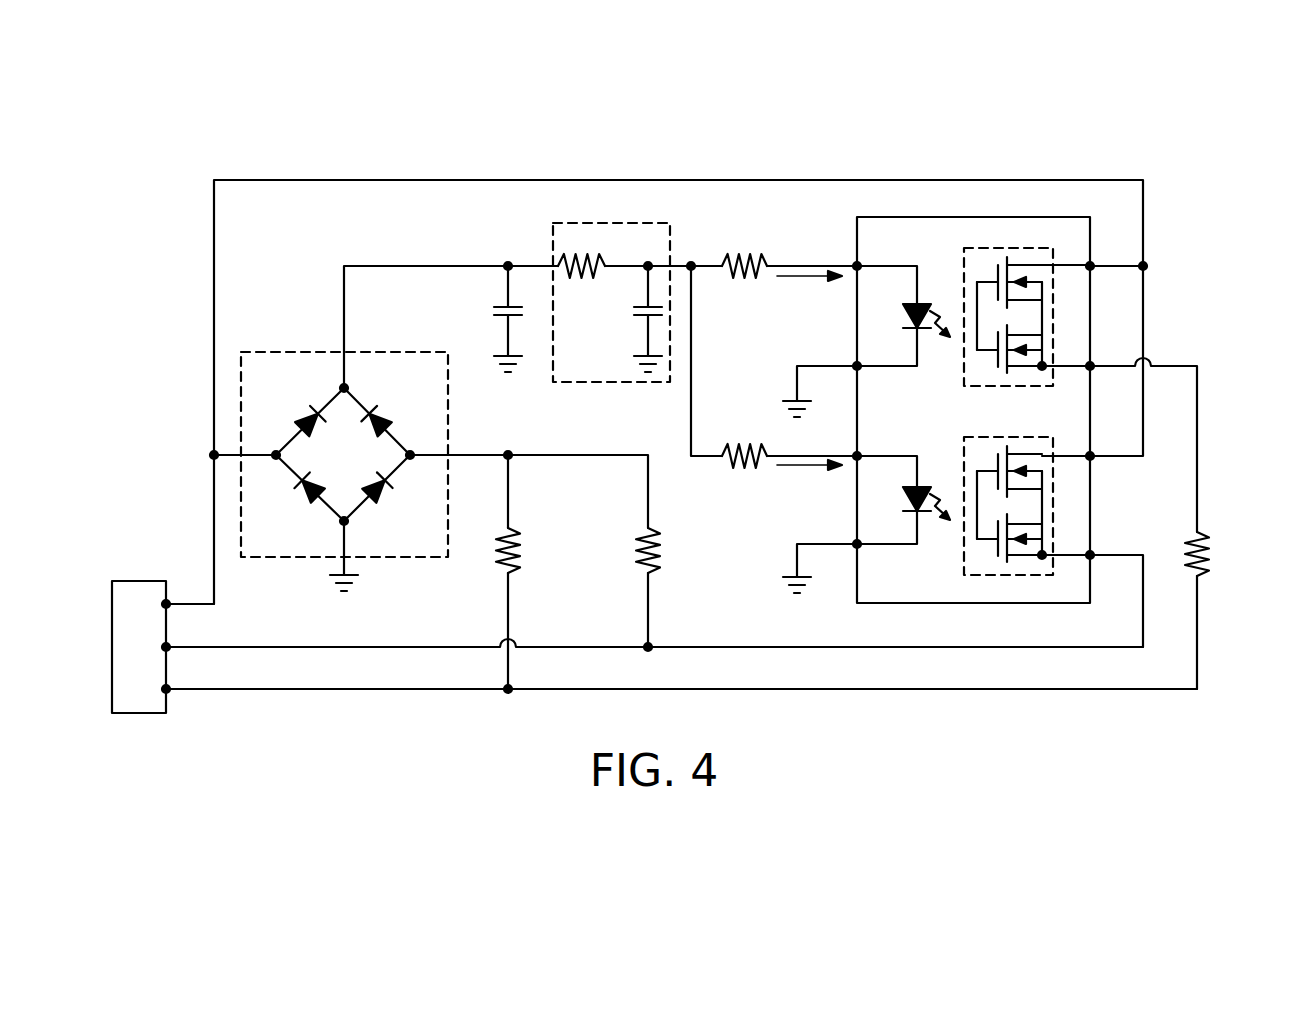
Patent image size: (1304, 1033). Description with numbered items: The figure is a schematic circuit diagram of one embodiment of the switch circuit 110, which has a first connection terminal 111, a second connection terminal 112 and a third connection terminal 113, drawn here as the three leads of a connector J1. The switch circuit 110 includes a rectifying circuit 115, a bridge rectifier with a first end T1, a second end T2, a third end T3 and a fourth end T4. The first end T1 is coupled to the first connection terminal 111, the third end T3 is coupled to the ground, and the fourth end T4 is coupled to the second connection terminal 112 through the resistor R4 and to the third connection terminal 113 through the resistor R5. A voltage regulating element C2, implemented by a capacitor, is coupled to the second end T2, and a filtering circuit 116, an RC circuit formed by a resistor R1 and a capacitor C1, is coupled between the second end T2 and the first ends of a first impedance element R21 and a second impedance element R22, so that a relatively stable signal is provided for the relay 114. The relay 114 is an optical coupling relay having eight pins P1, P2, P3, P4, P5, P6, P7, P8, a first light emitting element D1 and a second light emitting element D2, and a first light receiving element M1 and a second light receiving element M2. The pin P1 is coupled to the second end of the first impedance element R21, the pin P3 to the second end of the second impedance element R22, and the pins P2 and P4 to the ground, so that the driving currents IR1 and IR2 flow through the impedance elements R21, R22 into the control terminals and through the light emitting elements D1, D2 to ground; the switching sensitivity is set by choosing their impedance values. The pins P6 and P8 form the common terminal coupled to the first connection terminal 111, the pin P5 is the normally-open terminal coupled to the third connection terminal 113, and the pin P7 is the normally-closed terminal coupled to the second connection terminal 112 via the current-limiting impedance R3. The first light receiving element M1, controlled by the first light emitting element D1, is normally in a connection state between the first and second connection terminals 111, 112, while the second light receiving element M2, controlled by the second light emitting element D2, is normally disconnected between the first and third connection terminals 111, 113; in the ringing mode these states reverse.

The switch circuit 110 is at (1229, 153).
The first connection terminal 111 is at (166, 606).
The second connection terminal 112 is at (166, 691).
The third connection terminal 113 is at (166, 649).
The relay 114 is at (924, 217).
The rectifying circuit 115 is at (241, 381).
The filtering circuit 116 is at (636, 222).
The connector J1 is at (138, 581).
The first end of the rectifying circuit T1 is at (263, 442).
The second end of the rectifying circuit T2 is at (361, 383).
The third end of the rectifying circuit T3 is at (361, 527).
The fourth end of the rectifying circuit T4 is at (424, 442).
The capacitor C1 is at (630, 319).
The voltage regulating element C2 is at (490, 319).
The resistor R1 is at (581, 252).
The first impedance element R21 is at (744, 252).
The second impedance element R22 is at (744, 443).
The current-limiting impedance R3 is at (1215, 554).
The resistor R4 is at (490, 574).
The resistor R5 is at (630, 589).
The driving current IR1 is at (809, 289).
The driving current IR2 is at (809, 478).
The pin P1 is at (842, 254).
The pin P2 is at (842, 354).
The pin P3 is at (842, 444).
The pin P4 is at (842, 533).
The pin P5 is at (1106, 542).
The pin P6 is at (1106, 444).
The pin P7 is at (1106, 354).
The pin P8 is at (1106, 254).
The first light emitting element D1 is at (903, 316).
The second light emitting element D2 is at (903, 500).
The first light receiving element M1 is at (987, 248).
The second light receiving element M2 is at (1053, 478).